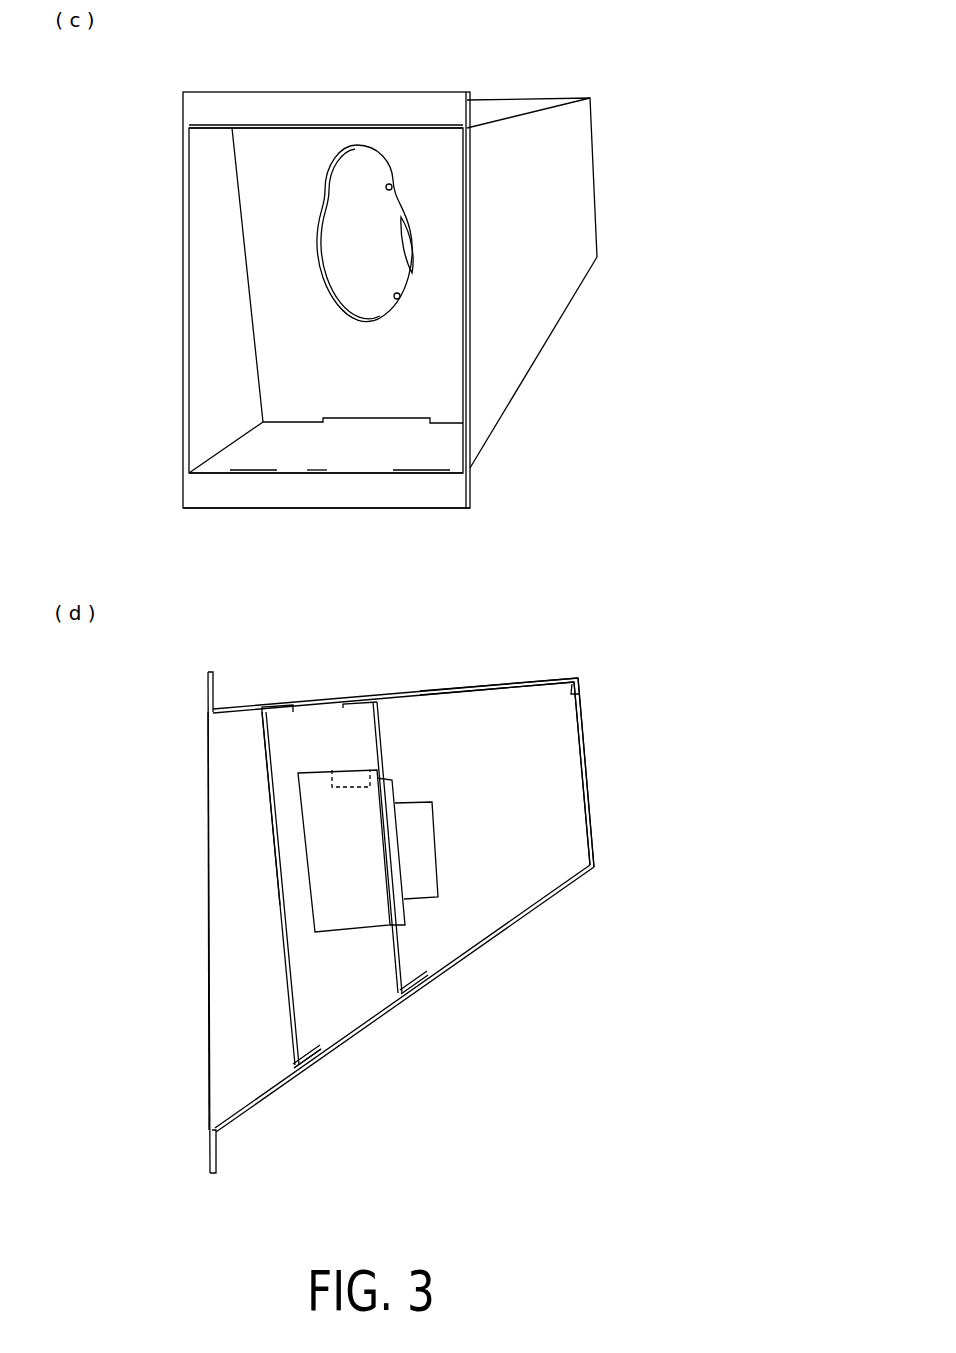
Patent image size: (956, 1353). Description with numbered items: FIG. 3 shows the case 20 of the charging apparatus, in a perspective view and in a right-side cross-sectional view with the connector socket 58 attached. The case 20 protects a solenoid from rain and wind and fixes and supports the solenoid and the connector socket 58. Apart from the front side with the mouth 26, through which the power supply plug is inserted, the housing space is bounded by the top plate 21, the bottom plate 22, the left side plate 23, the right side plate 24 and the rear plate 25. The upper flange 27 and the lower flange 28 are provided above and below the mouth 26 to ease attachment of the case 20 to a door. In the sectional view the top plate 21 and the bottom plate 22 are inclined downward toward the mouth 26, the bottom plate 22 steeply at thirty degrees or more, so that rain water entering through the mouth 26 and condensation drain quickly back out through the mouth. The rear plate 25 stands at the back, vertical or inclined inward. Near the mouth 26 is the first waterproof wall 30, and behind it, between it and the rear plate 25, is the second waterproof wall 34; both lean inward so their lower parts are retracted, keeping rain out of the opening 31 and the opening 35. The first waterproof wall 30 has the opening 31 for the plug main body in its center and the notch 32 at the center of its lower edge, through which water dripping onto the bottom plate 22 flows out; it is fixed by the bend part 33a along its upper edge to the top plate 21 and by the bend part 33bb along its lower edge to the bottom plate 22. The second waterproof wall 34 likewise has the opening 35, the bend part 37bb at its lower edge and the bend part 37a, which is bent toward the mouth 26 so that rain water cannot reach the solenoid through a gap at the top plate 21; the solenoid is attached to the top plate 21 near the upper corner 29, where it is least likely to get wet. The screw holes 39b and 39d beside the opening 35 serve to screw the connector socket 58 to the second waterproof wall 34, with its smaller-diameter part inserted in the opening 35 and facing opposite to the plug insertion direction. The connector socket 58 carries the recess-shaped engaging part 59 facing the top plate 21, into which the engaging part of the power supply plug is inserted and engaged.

The case 20 is at (470, 508).
The top plate 21 is at (507, 108).
The bottom plate 22 is at (553, 895).
The left side plate 23 is at (189, 365).
The right side plate 24 is at (515, 342).
The rear plate 25 is at (587, 773).
The mouth 26 is at (208, 842).
The upper flange 27 is at (297, 113).
The lower flange 28 is at (418, 495).
The upper corner 29 is at (580, 698).
The first waterproof wall 30 is at (307, 388).
The opening 31 is at (317, 265).
The notch 32 is at (368, 422).
The bend part 33a is at (273, 712).
The bend part 33bb is at (308, 1067).
The second waterproof wall 34 is at (398, 950).
The opening 35 is at (397, 240).
The bend part 37a is at (347, 707).
The bend part 37bb is at (413, 997).
The screw hole 39b is at (389, 184).
The screw hole 39d is at (399, 299).
The connector socket 58 is at (440, 897).
The engaging part 59 is at (375, 782).